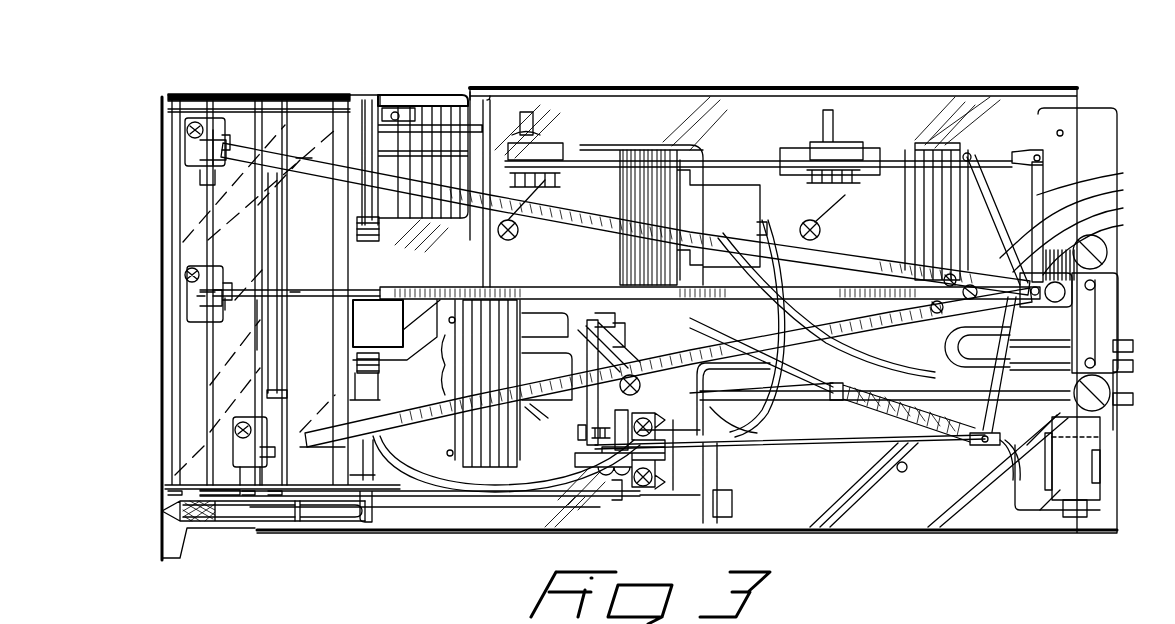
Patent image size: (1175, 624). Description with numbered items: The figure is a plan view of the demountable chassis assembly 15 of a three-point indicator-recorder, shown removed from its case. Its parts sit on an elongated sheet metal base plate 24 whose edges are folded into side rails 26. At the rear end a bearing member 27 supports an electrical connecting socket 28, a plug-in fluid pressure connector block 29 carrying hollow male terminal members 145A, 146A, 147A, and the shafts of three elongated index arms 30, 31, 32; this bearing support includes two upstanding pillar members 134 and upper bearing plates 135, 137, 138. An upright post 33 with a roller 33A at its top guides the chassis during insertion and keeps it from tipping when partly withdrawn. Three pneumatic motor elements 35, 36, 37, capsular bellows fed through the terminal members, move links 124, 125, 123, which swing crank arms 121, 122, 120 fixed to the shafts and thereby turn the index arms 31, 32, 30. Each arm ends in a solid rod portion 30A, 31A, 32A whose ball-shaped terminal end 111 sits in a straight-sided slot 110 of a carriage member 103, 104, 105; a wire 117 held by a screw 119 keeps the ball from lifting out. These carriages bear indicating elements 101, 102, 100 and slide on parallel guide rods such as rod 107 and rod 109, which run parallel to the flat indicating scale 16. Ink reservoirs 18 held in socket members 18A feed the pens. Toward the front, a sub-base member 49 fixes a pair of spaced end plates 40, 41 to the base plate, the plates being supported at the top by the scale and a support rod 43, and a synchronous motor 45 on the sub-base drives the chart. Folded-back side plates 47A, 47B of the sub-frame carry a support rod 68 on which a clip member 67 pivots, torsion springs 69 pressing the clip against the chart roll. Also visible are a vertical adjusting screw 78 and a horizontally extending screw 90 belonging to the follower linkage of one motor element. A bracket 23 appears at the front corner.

The demountable chassis assembly 15 is at (809, 546).
The indicating scale 16 is at (165, 392).
The ink reservoir 18 is at (252, 512).
The socket member 18A is at (318, 512).
The mounting bracket 23 is at (163, 540).
The base plate 24 is at (902, 500).
The side rail 26 is at (765, 90).
The bearing member 27 is at (1112, 272).
The electrical connecting socket 28 is at (1097, 460).
The fluid pressure connector block 29 is at (1118, 386).
The index arm 30 is at (727, 255).
The solid rod portion 30A is at (302, 289).
The index arm 31 is at (593, 210).
The solid rod portion 31A is at (300, 160).
The index arm 32 is at (528, 440).
The solid rod portion 32A is at (312, 447).
The upright post 33 is at (1090, 503).
The roller 33A is at (1066, 517).
The pneumatic motor element 35 is at (496, 470).
The pneumatic motor element 36 is at (630, 145).
The pneumatic motor element 37 is at (952, 152).
The end plate 40 is at (387, 492).
The end plate 41 is at (325, 97).
The support rod 43 is at (332, 186).
The motor 45 is at (432, 112).
The side plate 47A is at (195, 455).
The side plate 47B is at (230, 112).
The sub-base member 49 is at (412, 448).
The clip member 67 is at (312, 319).
The support rod 68 is at (395, 292).
The torsion spring 69 is at (398, 235).
The vertical adjusting screw 78 is at (640, 386).
The horizontally extending screw 90 is at (572, 437).
The indicating element 100 is at (225, 406).
The indicating element 101 is at (178, 166).
The indicating element 102 is at (191, 328).
The carriage member 103 is at (222, 165).
The carriage member 104 is at (222, 278).
The carriage member 105 is at (272, 420).
The guide rod 107 is at (205, 185).
The guide rod 109 is at (257, 355).
The slot 110 is at (195, 308).
The ball-shaped terminal end 111 is at (205, 292).
The wire 117 is at (225, 300).
The screw 119 is at (185, 268).
The crank arm 120 is at (943, 299).
The crank arm 121 is at (992, 408).
The crank arm 122 is at (935, 203).
The link 123 is at (985, 160).
The link 124 is at (765, 445).
The link 125 is at (740, 164).
The upstanding pillar member 134 is at (1108, 252).
The upper bearing plate 135 is at (937, 279).
The upper bearing plate 137 is at (923, 317).
The upper bearing plate 138 is at (923, 308).
The hollow male terminal member 145A is at (1125, 342).
The hollow male terminal member 146A is at (1130, 366).
The hollow male terminal member 147A is at (1132, 398).